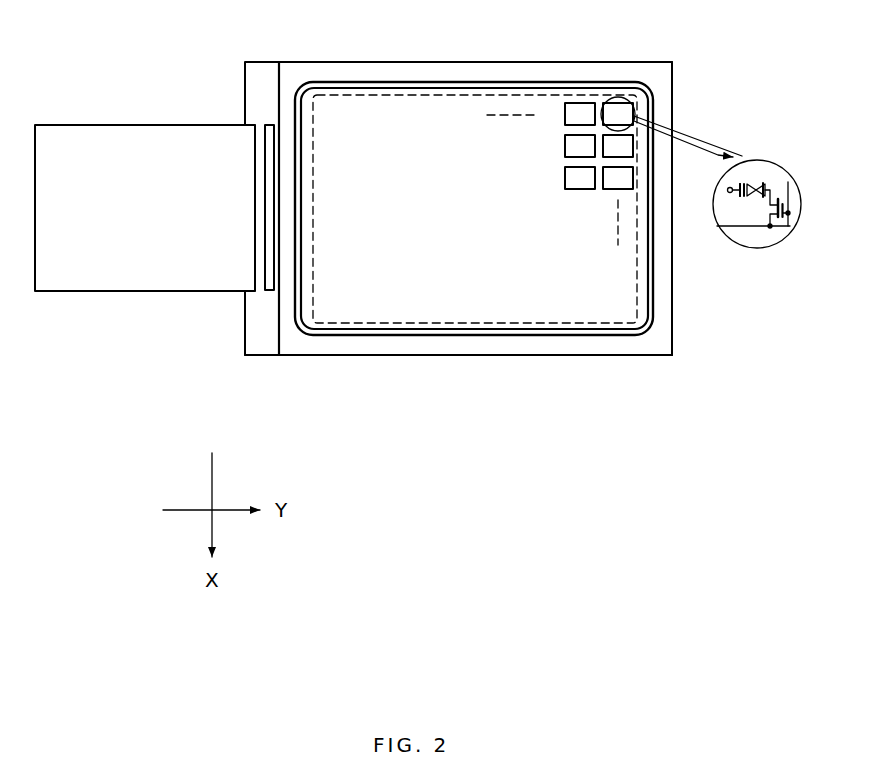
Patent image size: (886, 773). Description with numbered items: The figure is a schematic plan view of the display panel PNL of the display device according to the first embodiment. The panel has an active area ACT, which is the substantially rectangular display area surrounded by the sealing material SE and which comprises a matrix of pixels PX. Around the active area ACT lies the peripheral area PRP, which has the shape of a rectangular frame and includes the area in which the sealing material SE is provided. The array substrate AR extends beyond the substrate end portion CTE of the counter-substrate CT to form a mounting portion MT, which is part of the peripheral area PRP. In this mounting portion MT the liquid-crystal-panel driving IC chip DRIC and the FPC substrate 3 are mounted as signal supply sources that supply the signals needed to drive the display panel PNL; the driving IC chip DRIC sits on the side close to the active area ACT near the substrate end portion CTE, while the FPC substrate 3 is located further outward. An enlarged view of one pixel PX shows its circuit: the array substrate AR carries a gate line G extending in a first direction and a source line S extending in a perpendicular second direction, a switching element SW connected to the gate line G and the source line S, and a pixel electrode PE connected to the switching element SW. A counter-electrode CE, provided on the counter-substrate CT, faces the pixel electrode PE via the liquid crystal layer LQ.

The FPC substrate 3 is at (125, 125).
The liquid-crystal-panel driving IC chip DRIC is at (272, 124).
The substrate end portion CTE is at (279, 80).
The mounting portion MT is at (258, 295).
The array substrate AR is at (252, 338).
The display panel PNL is at (258, 359).
The counter-substrate CT is at (305, 348).
The sealing material SE is at (430, 82).
The active area ACT is at (417, 328).
The peripheral area PRP is at (663, 336).
The pixel PX is at (618, 98).
The counter-electrode CE is at (727, 190).
The liquid crystal layer LQ is at (757, 182).
The pixel electrode PE is at (760, 181).
The switching element SW is at (762, 214).
The gate line G is at (792, 211).
The source line S is at (742, 227).